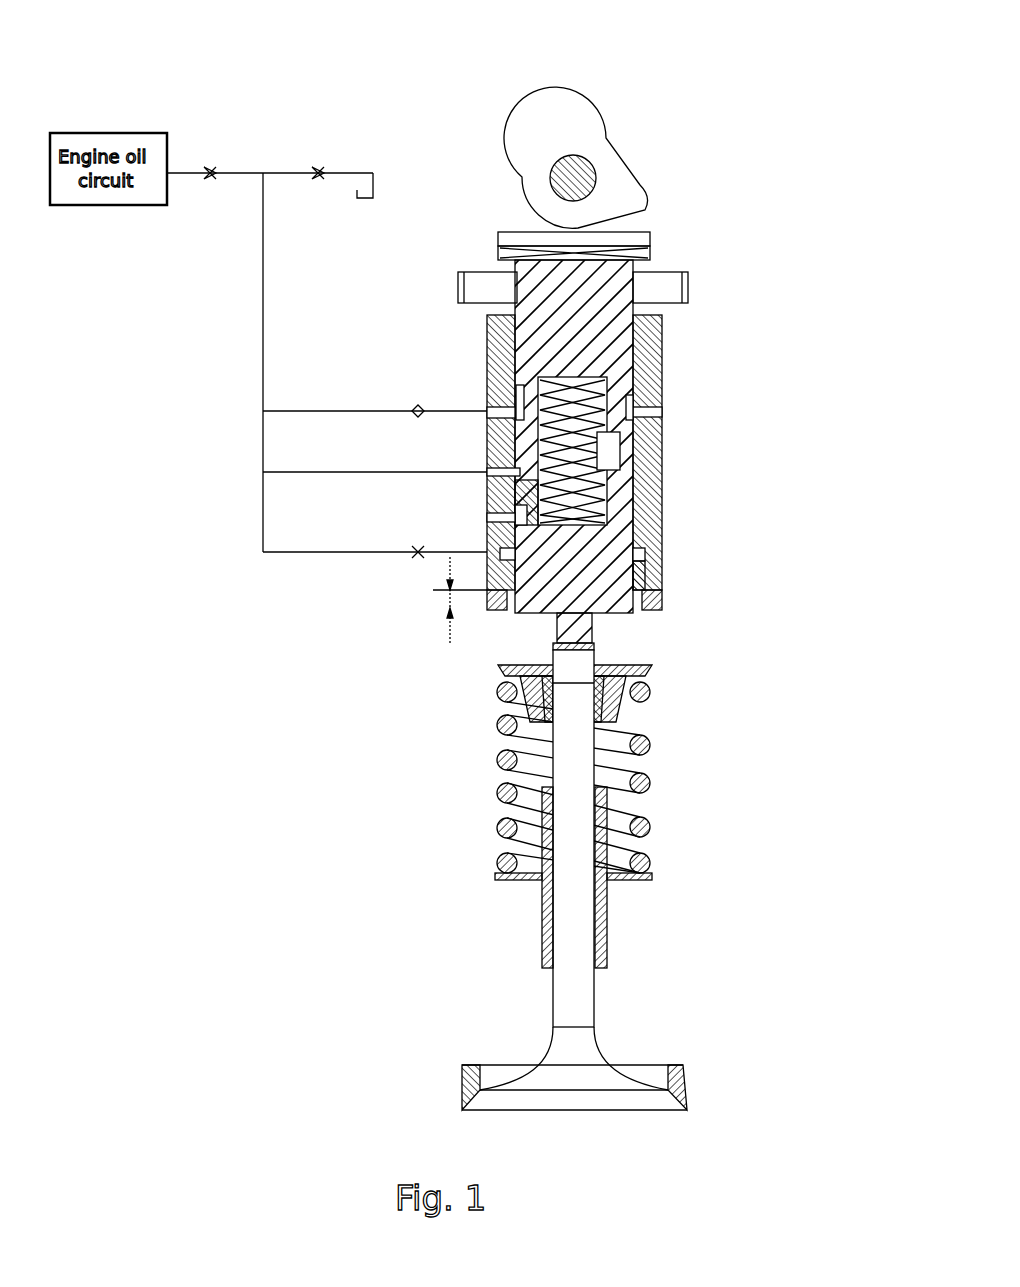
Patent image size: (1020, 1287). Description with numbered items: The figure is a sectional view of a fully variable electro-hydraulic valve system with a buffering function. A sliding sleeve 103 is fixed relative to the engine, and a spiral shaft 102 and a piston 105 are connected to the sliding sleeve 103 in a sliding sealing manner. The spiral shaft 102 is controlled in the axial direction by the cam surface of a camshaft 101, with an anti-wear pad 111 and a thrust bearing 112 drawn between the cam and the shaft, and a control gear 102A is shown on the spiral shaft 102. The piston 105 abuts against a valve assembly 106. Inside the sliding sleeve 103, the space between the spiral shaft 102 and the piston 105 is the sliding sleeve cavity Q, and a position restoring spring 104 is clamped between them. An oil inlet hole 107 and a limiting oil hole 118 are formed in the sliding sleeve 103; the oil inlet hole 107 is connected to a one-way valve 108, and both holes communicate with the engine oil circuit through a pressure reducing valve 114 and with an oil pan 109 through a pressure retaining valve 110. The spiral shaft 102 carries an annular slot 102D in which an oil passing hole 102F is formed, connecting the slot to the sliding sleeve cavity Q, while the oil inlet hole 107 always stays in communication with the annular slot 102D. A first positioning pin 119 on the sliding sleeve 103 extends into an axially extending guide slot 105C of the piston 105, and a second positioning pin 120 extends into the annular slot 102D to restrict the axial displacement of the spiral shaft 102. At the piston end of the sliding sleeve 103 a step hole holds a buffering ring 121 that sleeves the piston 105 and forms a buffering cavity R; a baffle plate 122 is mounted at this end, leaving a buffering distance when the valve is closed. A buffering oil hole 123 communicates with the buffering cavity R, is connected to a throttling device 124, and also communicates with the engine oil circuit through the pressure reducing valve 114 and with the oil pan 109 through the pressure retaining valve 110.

The camshaft 101 is at (585, 165).
The spiral shaft 102 is at (662, 330).
The control gear 102A is at (688, 290).
The annular slot 102D is at (660, 400).
The oil passing hole 102F is at (515, 378).
The sliding sleeve 103 is at (640, 372).
The position restoring spring 104 is at (640, 500).
The piston 105 is at (660, 530).
The guide slot 105C is at (515, 490).
The valve assembly 106 is at (630, 712).
The oil inlet hole 107 is at (487, 409).
The one-way valve 108 is at (418, 407).
The oil pan 109 is at (392, 188).
The pressure retaining valve 110 is at (318, 168).
The anti-wear pad 111 is at (650, 240).
The thrust bearing 112 is at (650, 255).
The pressure reducing valve 114 is at (212, 168).
The limiting oil hole 118 is at (487, 472).
The first positioning pin 119 is at (487, 517).
The second positioning pin 120 is at (655, 412).
The buffering ring 121 is at (645, 580).
The baffle plate 122 is at (662, 605).
The buffering oil hole 123 is at (500, 562).
The throttling device 124 is at (418, 556).
The sliding sleeve cavity Q is at (608, 451).
The buffering cavity R is at (645, 555).